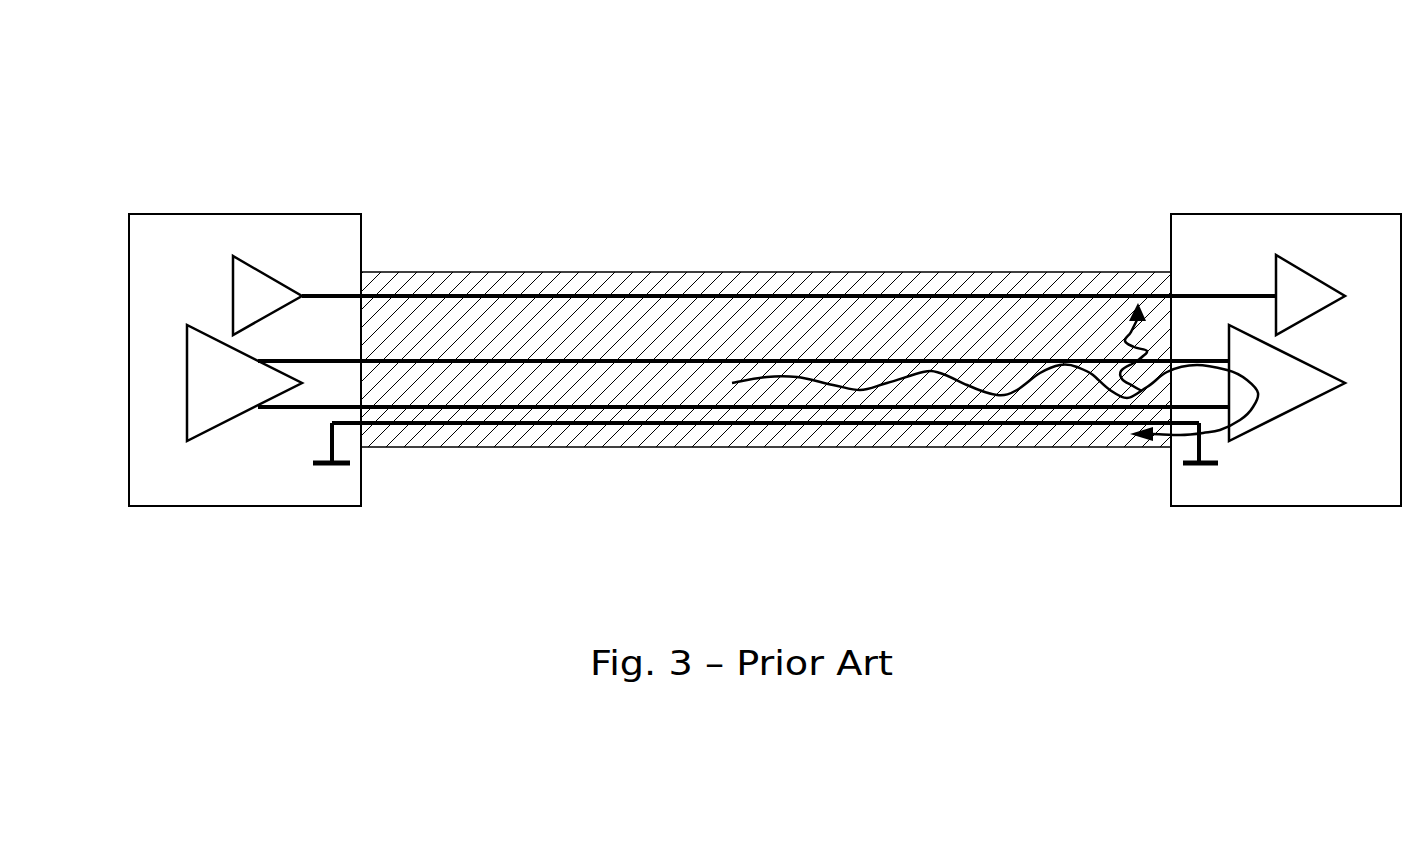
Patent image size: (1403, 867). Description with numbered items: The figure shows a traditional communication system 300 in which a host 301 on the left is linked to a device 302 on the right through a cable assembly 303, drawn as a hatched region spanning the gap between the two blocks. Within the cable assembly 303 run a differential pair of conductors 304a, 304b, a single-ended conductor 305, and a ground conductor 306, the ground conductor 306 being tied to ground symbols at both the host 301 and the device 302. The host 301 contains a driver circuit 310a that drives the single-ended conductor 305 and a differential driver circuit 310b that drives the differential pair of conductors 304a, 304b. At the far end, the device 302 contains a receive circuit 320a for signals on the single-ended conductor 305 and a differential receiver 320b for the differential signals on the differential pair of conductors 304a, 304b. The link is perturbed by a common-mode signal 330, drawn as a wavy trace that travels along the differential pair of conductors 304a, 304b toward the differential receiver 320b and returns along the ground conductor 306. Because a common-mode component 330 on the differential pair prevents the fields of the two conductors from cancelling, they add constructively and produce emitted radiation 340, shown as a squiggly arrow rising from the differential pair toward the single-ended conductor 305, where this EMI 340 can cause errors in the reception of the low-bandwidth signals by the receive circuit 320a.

The traditional communication system 300 is at (128, 98).
The host 301 is at (187, 499).
The device 302 is at (1392, 499).
The cable assembly 303 is at (418, 272).
The differential pair conductor 304a is at (382, 362).
The differential pair conductor 304b is at (497, 407).
The single-ended conductor 305 is at (772, 290).
The ground conductor 306 is at (613, 423).
The driver circuit 310a is at (240, 294).
The differential driver circuit 310b is at (198, 389).
The receive circuit 320a is at (1283, 278).
The differential receiver 320b is at (1270, 365).
The common-mode signal 330 is at (1090, 390).
The emitted radiation 340 is at (1122, 318).